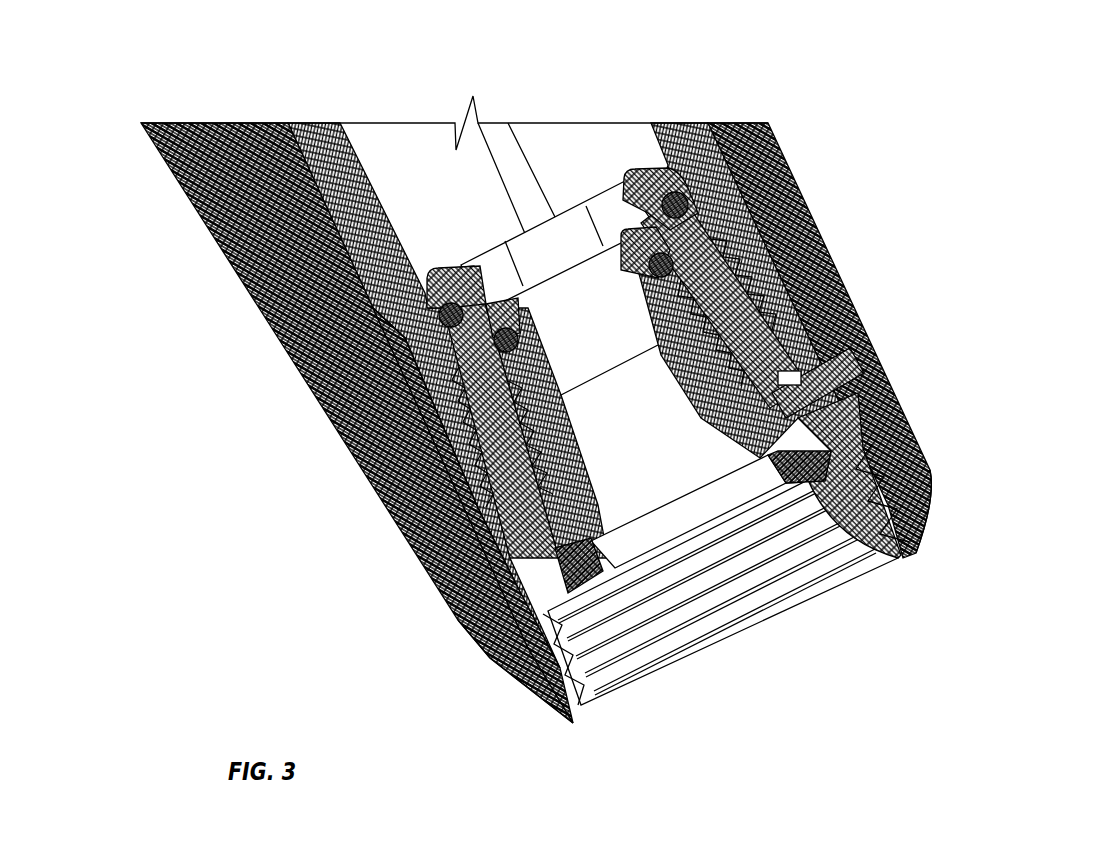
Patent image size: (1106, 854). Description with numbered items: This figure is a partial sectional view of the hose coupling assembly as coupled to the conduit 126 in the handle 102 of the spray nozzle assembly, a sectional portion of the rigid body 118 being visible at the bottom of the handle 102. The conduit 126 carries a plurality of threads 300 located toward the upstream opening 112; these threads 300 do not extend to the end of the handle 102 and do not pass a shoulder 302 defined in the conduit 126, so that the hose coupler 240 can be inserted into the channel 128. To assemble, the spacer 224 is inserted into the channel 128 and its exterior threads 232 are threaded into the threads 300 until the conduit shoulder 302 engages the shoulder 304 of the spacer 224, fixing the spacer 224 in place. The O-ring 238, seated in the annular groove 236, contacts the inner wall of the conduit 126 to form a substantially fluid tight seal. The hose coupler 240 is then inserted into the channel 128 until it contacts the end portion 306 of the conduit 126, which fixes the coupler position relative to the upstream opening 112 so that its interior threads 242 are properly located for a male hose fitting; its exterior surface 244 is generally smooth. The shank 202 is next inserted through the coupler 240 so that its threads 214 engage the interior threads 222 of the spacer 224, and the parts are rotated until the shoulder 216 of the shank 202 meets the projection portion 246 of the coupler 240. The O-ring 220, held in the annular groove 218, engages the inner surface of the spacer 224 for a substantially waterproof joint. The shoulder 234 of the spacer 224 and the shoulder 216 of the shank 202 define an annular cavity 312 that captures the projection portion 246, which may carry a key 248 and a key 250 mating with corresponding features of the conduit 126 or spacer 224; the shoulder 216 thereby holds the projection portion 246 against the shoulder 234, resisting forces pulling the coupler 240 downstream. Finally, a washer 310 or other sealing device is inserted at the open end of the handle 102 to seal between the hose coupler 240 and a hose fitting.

The handle 102 is at (200, 270).
The upstream opening 112 is at (692, 683).
The body 118 is at (232, 165).
The conduit 126 is at (318, 142).
The channel 128 is at (548, 172).
The shank 202 is at (565, 527).
The threads 214 is at (478, 583).
The shoulder 216 is at (940, 478).
The annular groove 218 is at (522, 300).
The gasket 220 is at (636, 205).
The threads 222 is at (710, 287).
The spacer 224 is at (683, 237).
The threads 232 is at (733, 300).
The shoulder 234 is at (757, 312).
The annular groove 236 is at (450, 298).
The gasket 238 is at (665, 190).
The hose coupler 240 is at (576, 705).
The threads 242 is at (797, 588).
The exterior surface 244 is at (542, 688).
The projection portion 246 is at (752, 397).
The key 248 is at (462, 615).
The key 250 is at (778, 372).
The threads 300 is at (440, 445).
The shoulder 302 is at (437, 355).
The shoulder 304 is at (458, 388).
The end portion 306 is at (480, 518).
The washer 310 is at (873, 562).
The cavity 312 is at (872, 382).